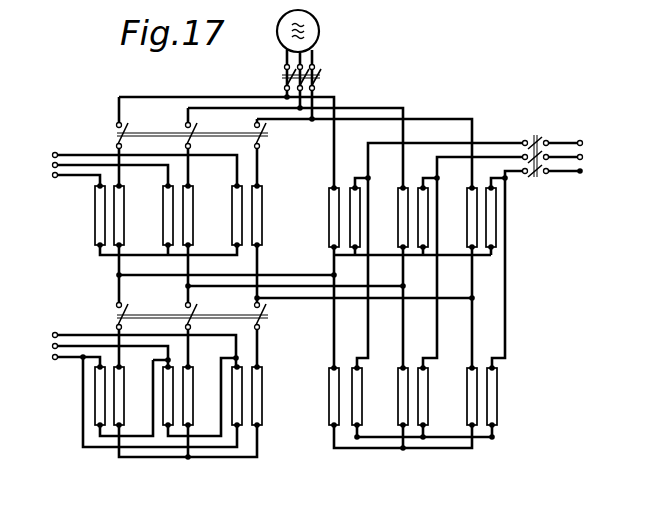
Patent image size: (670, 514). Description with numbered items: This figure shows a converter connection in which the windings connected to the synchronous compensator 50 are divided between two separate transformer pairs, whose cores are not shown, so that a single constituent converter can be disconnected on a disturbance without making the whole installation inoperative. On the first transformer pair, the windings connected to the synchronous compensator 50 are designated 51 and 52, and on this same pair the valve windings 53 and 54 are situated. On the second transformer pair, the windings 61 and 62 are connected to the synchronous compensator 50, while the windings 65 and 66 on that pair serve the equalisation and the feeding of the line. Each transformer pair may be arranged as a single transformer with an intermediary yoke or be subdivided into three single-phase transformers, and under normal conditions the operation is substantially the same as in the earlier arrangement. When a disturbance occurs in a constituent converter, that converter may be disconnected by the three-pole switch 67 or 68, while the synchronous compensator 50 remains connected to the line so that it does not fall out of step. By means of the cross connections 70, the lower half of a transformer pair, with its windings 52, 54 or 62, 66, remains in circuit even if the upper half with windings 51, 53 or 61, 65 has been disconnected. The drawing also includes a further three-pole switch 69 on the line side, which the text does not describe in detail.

The synchronous compensator 50 is at (315, 38).
The winding on first transformer pair 51 is at (263, 211).
The winding on first transformer pair 52 is at (262, 391).
The valve winding 53 is at (233, 226).
The valve winding 54 is at (237, 418).
The winding on second transformer pair 61 is at (467, 194).
The winding on second transformer pair 62 is at (468, 404).
The equalising and line-feeding winding 65 is at (498, 227).
The equalising and line-feeding winding 66 is at (497, 385).
The three-pole switch 67 is at (117, 134).
The three-pole switch 68 is at (117, 317).
The three-pole switch 69 is at (537, 141).
The cross connections 70 is at (302, 298).